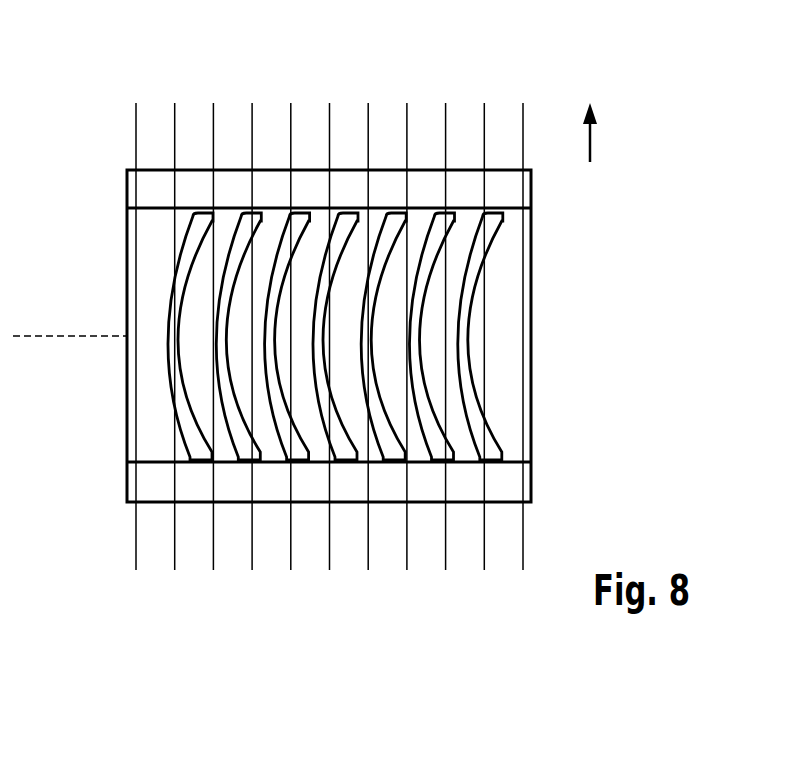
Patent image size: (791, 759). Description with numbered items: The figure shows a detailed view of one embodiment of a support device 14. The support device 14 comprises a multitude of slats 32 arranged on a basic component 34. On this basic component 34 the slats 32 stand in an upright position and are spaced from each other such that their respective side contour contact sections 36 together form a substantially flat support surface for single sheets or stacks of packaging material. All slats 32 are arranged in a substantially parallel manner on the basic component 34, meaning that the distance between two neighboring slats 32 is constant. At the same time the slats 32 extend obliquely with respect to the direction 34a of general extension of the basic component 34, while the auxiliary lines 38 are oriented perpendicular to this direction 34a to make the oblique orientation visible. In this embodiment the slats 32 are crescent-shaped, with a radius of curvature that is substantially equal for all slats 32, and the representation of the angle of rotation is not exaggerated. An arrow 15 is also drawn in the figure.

The support device 14 is at (606, 300).
The flow direction 15 is at (590, 138).
The slats 32 is at (275, 420).
The basic component 34 is at (531, 483).
The direction of general extension of the basic component 34a is at (36, 338).
The side contour contact sections 36 is at (268, 280).
The auxiliary lines 38 is at (136, 115).